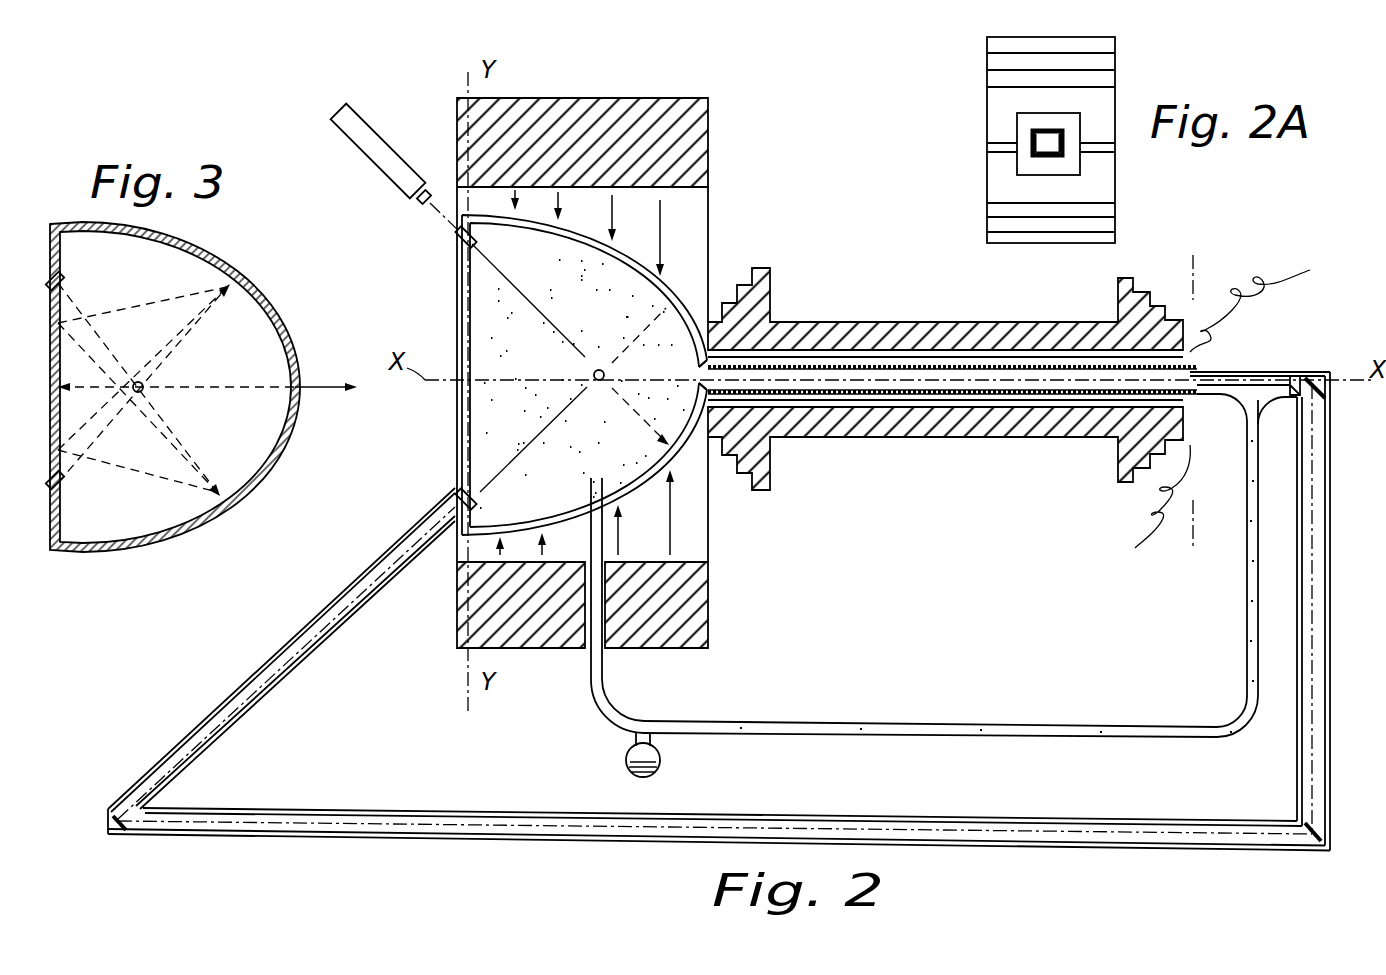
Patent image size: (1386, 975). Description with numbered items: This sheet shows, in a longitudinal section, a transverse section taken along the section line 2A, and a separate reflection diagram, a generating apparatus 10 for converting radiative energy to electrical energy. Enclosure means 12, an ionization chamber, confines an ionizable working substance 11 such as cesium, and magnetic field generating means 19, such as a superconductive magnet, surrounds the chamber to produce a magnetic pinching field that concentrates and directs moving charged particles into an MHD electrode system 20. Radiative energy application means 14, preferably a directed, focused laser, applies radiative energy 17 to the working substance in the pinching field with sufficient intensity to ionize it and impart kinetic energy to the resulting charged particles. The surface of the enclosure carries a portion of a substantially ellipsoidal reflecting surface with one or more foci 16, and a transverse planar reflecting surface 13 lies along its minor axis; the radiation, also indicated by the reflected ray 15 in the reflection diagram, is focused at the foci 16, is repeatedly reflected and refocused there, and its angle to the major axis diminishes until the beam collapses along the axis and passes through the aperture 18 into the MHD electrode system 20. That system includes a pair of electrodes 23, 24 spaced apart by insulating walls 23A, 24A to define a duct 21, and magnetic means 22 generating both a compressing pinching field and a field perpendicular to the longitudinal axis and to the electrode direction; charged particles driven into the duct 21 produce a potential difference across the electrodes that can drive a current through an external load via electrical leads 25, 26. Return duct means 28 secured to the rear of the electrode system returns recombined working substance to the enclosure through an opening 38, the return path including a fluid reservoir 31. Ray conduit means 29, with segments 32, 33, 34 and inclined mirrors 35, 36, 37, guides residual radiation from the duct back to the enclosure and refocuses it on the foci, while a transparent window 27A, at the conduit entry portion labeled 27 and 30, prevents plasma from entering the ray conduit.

In FIG. 2, the light sensing apparatus 10 is at (427, 432).
In FIG. 2, the ionizable working substance 11 is at (478, 458).
In FIG. 2, the enclosure means 12 is at (668, 290).
In FIG. 3, the enclosure means 12 is at (258, 300).
In FIG. 2, the transverse planar reflecting surface 13 is at (456, 244).
In FIG. 3, the transverse planar reflecting surface 13 is at (52, 295).
In FIG. 2, the radiative energy application means 14 is at (378, 147).
In FIG. 2, the light beam 15 is at (510, 292).
In FIG. 3, the light beam 15 is at (70, 318).
In FIG. 2, the foci 16 is at (597, 384).
In FIG. 3, the foci 16 is at (148, 395).
In FIG. 2, the radiative energy 17 is at (632, 410).
In FIG. 3, the radiative energy 17 is at (190, 440).
In FIG. 2, the aperture 18 is at (697, 372).
In FIG. 3, the aperture 18 is at (297, 382).
In FIG. 2, the magnetic field generating means 19 is at (600, 98).
In FIG. 2, the MHD electrode system 20 is at (876, 281).
In FIG. 2, the duct 21 is at (1060, 400).
In FIG. 2A, the duct 21 is at (1030, 155).
In FIG. 2, the magnetic means 22 is at (870, 437).
In FIG. 2A, the magnetic means 22 is at (1120, 63).
In FIG. 2, the electrode 23 is at (1018, 365).
In FIG. 2A, the electrode 23 is at (1045, 130).
In FIG. 2, the insulating wall 23A is at (952, 318).
In FIG. 2A, the insulating wall 23A is at (1030, 140).
In FIG. 2, the electrode 24 is at (970, 394).
In FIG. 2A, the electrode 24 is at (1048, 160).
In FIG. 2, the insulating wall 24A is at (890, 365).
In FIG. 2A, the insulating wall 24A is at (1062, 145).
In FIG. 2, the electrical lead 25 is at (1265, 304).
In FIG. 2, the electrical lead 26 is at (1150, 509).
In FIG. 2, the conduit 27 is at (1235, 374).
In FIG. 2, the transparent window 27A is at (1298, 372).
In FIG. 2, the return duct means 28 is at (590, 686).
In FIG. 2, the ray conduit means 29 is at (1339, 609).
In FIG. 2, the conduit junction 30 is at (1260, 398).
In FIG. 2, the fluid reservoir 31 is at (660, 764).
In FIG. 2, the segment 32 is at (1351, 611).
In FIG. 2, the segment 33 is at (988, 832).
In FIG. 2, the segment 34 is at (362, 592).
In FIG. 2, the inclined mirror 35 is at (1326, 405).
In FIG. 2, the inclined mirror 36 is at (1318, 830).
In FIG. 2, the inclined mirror 37 is at (135, 800).
In FIG. 2, the opening 38 is at (590, 481).
In FIG. 2, the section line 2A is at (1195, 262).